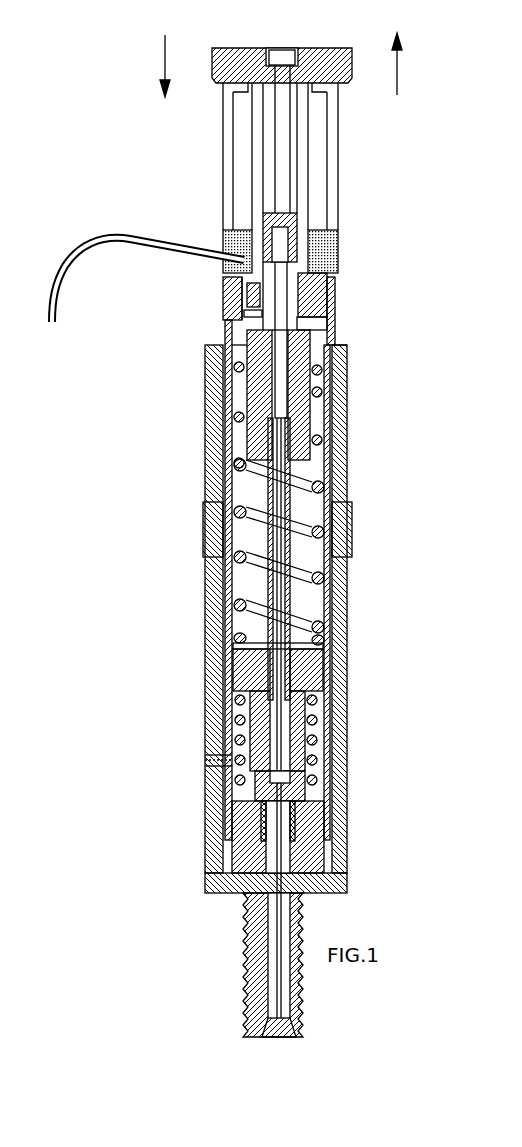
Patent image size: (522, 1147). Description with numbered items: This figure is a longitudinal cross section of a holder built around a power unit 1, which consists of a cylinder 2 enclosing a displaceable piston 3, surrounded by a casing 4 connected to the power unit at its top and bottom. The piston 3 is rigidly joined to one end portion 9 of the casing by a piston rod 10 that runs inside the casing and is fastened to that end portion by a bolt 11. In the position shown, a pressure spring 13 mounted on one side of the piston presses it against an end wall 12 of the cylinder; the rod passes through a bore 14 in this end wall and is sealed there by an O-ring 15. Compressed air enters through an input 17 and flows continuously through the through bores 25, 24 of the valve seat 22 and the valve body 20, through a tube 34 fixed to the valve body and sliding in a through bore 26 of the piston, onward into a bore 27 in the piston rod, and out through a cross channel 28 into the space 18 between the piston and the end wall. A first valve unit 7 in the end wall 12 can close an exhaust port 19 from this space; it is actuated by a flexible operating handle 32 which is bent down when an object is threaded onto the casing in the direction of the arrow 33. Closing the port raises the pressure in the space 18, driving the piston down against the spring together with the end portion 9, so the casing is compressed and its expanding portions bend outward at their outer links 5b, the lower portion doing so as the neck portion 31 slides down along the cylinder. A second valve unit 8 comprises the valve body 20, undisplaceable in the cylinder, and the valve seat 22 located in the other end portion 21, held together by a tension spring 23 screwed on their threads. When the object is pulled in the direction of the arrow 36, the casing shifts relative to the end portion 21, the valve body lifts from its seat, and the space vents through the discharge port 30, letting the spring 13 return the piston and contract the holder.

The power unit 1 is at (338, 338).
The cylinder 2 is at (232, 360).
The piston 3 is at (250, 430).
The casing 4 is at (204, 478).
The outer link 5b is at (340, 390).
The first valve unit 7 is at (212, 294).
The second valve unit 8 is at (312, 738).
The one end portion 9 is at (252, 62).
The piston rod 10 is at (300, 155).
The bolt 11 is at (283, 56).
The end wall 12 is at (326, 298).
The pressure spring 13 is at (320, 476).
The bore 14 is at (334, 312).
The O-ring 15 is at (330, 282).
The input 17 is at (274, 988).
The space 18 is at (226, 326).
The port 19 is at (225, 272).
The valve body 20 is at (240, 668).
The other end portion 21 is at (316, 846).
The valve seat 22 is at (306, 806).
The tension spring 23 is at (237, 714).
The through bore 24 is at (314, 718).
The through bore 25 is at (272, 840).
The through bore 26 is at (282, 400).
The bore 27 is at (282, 357).
The cross channel 28 is at (236, 345).
The discharge port 30 is at (212, 760).
The neck portion 31 is at (236, 368).
The flexible operating handle 32 is at (128, 244).
The arrow 33 is at (165, 62).
The tube 34 is at (288, 594).
The arrow 36 is at (398, 62).